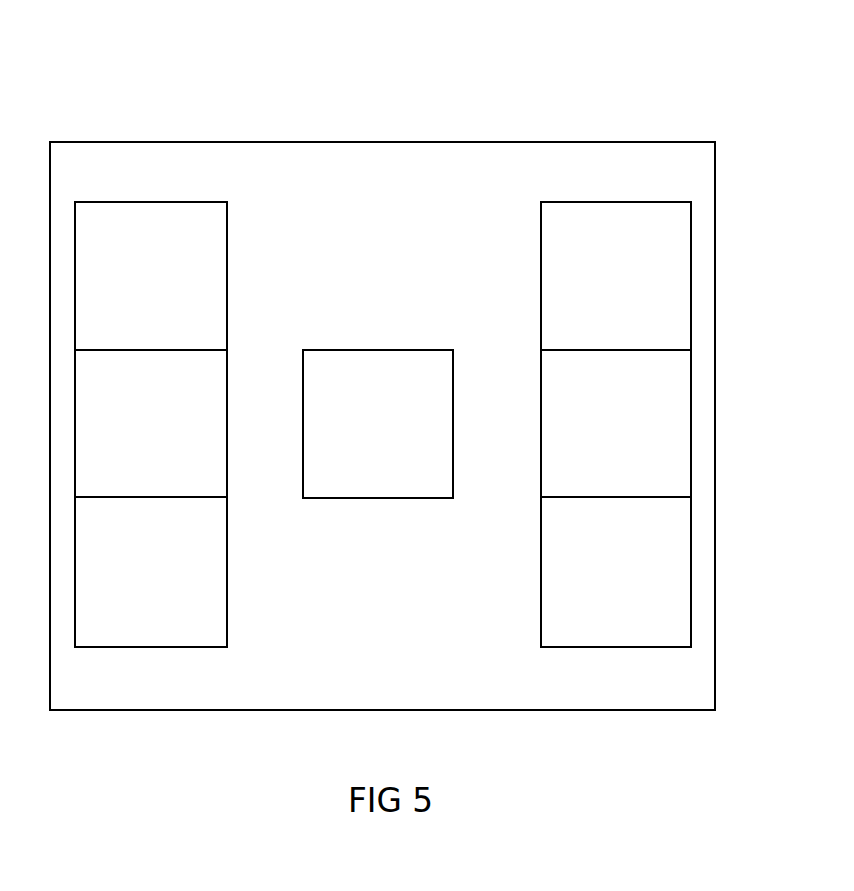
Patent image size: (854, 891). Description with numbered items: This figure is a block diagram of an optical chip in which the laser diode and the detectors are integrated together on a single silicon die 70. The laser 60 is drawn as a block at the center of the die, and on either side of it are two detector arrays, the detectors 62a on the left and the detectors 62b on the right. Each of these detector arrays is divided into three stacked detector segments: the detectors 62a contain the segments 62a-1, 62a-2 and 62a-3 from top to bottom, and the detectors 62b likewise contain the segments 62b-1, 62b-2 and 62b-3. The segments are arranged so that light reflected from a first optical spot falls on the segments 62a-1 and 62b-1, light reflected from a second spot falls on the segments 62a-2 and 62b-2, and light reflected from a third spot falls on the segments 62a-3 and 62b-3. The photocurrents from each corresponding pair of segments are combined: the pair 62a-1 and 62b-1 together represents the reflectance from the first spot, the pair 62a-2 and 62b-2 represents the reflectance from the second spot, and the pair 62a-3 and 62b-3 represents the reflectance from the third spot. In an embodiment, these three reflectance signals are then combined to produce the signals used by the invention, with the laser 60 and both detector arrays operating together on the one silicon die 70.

The silicon die 70 is at (525, 53).
The laser 60 is at (390, 350).
The detectors 62a is at (151, 449).
The detector segment 62a-1 is at (227, 273).
The detector segment 62a-2 is at (227, 370).
The detector segment 62a-3 is at (227, 620).
The detectors 62b is at (616, 449).
The detector segment 62b-1 is at (691, 260).
The detector segment 62b-2 is at (691, 358).
The detector segment 62b-3 is at (691, 607).